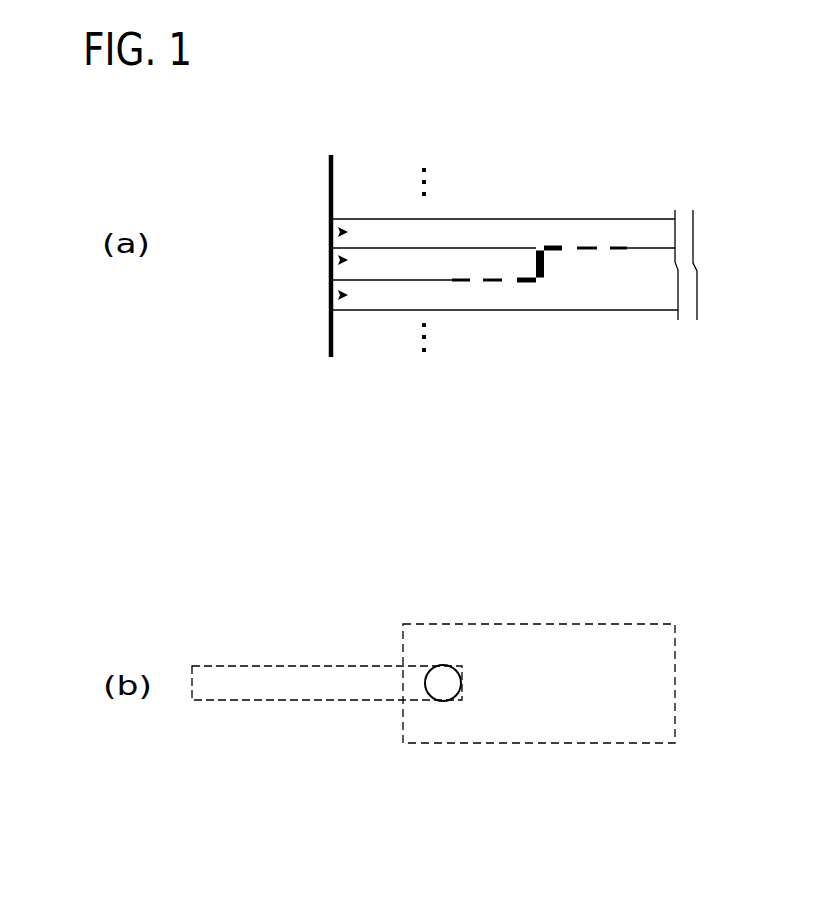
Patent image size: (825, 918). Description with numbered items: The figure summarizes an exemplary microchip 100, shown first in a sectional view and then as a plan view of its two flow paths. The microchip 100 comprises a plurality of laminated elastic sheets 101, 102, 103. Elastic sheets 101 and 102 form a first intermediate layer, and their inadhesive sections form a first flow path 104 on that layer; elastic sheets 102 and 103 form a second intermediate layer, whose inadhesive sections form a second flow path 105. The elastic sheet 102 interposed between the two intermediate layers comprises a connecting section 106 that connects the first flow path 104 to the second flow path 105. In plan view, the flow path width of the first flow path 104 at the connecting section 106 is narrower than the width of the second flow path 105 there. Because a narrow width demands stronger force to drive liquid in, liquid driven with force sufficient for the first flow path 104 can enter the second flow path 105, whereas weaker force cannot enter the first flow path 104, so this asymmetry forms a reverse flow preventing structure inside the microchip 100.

The microchip 100 is at (576, 103).
The elastic sheet 101 is at (339, 295).
The elastic sheet 102 is at (339, 259).
The elastic sheet 103 is at (339, 230).
The first flow path 104 is at (482, 297).
The second flow path 105 is at (588, 229).
The connecting section 106 is at (558, 269).